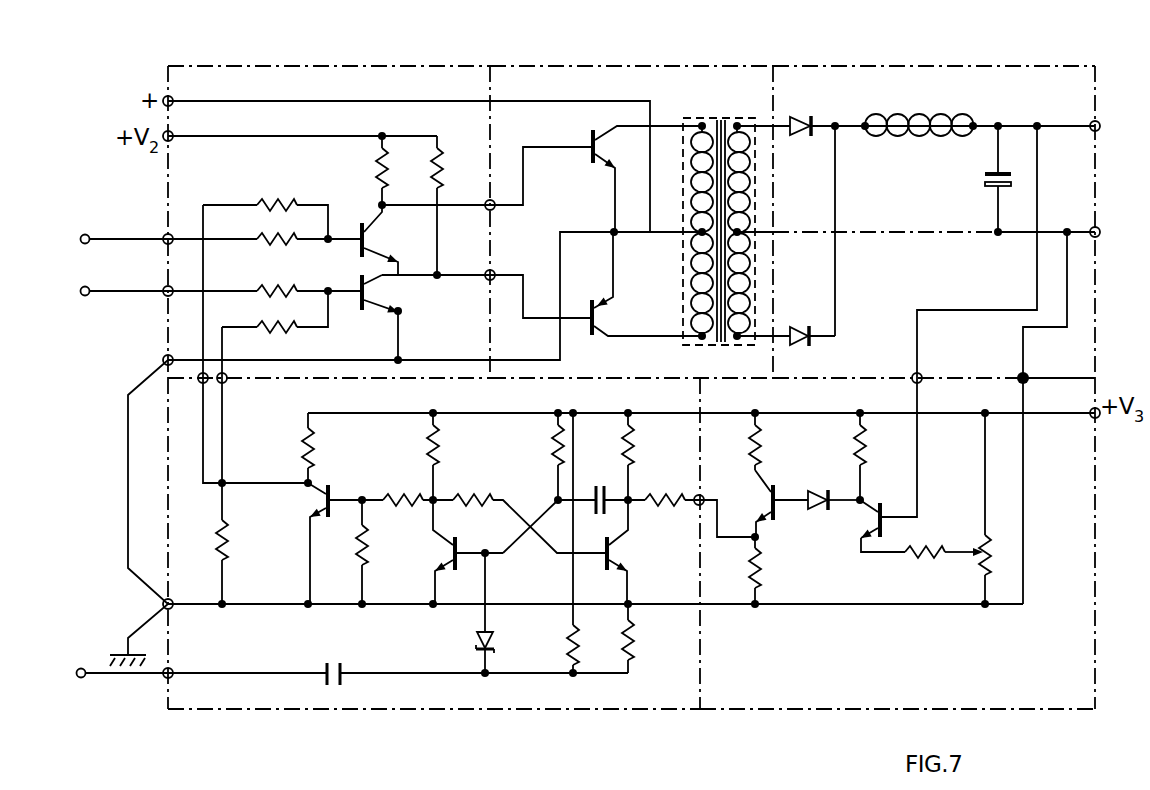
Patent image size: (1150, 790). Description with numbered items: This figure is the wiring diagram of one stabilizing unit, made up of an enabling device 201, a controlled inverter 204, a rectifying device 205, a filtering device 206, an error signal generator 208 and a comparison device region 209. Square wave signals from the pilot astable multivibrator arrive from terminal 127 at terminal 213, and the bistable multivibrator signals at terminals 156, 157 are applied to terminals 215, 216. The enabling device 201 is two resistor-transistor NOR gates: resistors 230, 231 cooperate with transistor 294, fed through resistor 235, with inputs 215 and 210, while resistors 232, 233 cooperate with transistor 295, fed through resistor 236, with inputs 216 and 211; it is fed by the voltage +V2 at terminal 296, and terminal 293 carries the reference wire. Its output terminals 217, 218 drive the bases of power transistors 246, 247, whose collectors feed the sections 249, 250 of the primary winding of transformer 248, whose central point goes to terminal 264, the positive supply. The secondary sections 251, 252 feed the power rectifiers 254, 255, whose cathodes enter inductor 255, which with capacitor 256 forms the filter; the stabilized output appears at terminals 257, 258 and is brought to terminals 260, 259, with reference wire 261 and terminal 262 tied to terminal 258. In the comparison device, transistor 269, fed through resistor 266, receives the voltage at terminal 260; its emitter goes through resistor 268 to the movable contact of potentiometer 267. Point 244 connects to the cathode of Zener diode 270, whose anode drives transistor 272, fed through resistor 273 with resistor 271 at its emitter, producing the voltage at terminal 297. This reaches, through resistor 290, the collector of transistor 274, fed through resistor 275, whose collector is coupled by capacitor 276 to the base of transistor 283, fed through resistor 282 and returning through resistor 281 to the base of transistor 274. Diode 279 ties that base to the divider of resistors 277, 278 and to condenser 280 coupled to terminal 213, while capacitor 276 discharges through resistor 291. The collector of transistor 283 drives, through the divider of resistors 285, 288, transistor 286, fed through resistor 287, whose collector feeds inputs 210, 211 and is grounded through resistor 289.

The enabling device 201 is at (452, 81).
The controlled inverter 204 is at (755, 80).
The rectifying device 205 is at (994, 80).
The filtering device 206 is at (930, 135).
The error signal generator 208 is at (670, 697).
The regulator section 209 is at (920, 698).
The terminal 156 is at (106, 224).
The terminal 157 is at (106, 303).
The terminal 127 is at (105, 691).
The input 215 is at (145, 227).
The input 216 is at (146, 280).
The terminal 293 is at (406, 298).
The terminal 264 is at (406, 153).
The terminal 296 is at (300, 125).
The input 210 is at (231, 430).
The input 211 is at (243, 405).
The terminal 213 is at (395, 687).
The terminal 262 is at (564, 604).
The output terminal 217 is at (487, 191).
The output terminal 218 is at (487, 294).
The terminal 297 is at (724, 504).
The terminal 257 is at (1112, 115).
The terminal 258 is at (936, 221).
The terminal 259 is at (1056, 418).
The terminal 260 is at (961, 319).
The resistor 230 is at (265, 274).
The resistor 231 is at (265, 228).
The resistor 232 is at (265, 301).
The resistor 233 is at (275, 324).
The resistor 235 is at (360, 172).
The resistor 236 is at (459, 205).
The transistor 294 is at (394, 240).
The transistor 295 is at (376, 319).
The power transistor 246 is at (621, 177).
The power transistor 247 is at (640, 301).
The transformer 248 is at (718, 118).
The section of primary winding 249 is at (690, 190).
The section of primary winding 250 is at (690, 282).
The section of secondary winding 251 is at (752, 182).
The section of secondary winding 252 is at (752, 264).
The power rectifier 254 is at (916, 111).
The power rectifier / inductor 255 is at (855, 229).
The capacitor 256 is at (965, 179).
The resistor 287 is at (282, 448).
The transistor 286 is at (308, 545).
The resistor 289 is at (245, 545).
The resistor 288 is at (340, 554).
The resistor 285 is at (399, 483).
The resistor 281 is at (520, 506).
The resistor 282 is at (457, 454).
The transistor 283 is at (444, 554).
The resistor 291 is at (533, 481).
The capacitor 276 is at (593, 490).
The resistor 275 is at (652, 456).
The transistor 274 is at (642, 554).
The resistor 290 is at (663, 482).
The resistor 277 is at (547, 541).
The resistor 278 is at (652, 638).
The diode 279 is at (459, 613).
The condenser 280 is at (362, 658).
The resistor 273 is at (780, 439).
The transistor 272 is at (762, 526).
The resistor 271 is at (780, 572).
The Zener diode 270 is at (829, 488).
The resistor 266 is at (884, 454).
The transistor 269 is at (884, 530).
The point 244 is at (857, 544).
The resistor 268 is at (944, 574).
The potentiometer 267 is at (1010, 508).
The reference wire 261 is at (835, 604).